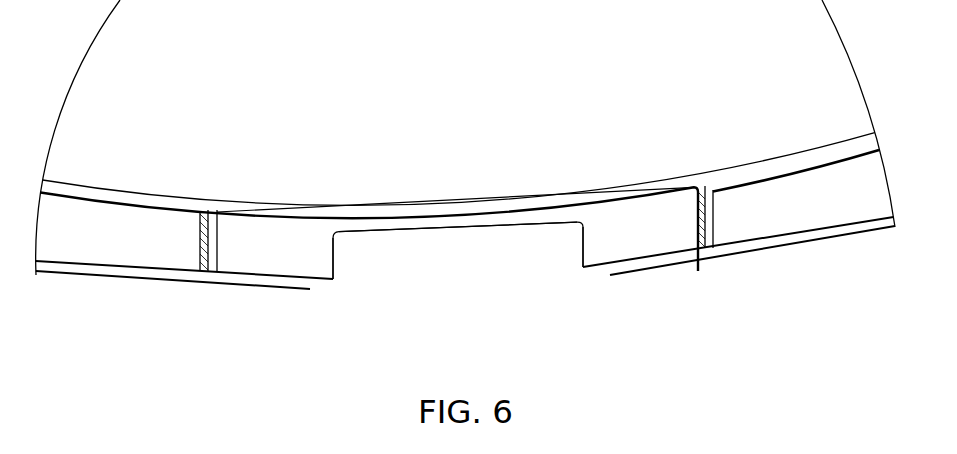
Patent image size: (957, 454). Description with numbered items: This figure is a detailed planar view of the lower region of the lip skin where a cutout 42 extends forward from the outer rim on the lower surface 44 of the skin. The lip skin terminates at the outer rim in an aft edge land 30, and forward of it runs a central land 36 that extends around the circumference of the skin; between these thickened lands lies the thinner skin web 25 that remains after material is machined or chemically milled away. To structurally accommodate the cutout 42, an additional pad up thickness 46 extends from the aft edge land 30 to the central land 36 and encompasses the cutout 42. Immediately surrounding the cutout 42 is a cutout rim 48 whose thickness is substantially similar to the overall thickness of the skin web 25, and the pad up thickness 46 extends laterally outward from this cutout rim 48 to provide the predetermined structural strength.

The skin web 25 is at (418, 65).
The aft edge land 30 is at (752, 243).
The central land 36 is at (717, 180).
The cutout 42 is at (428, 257).
The lower surface 44 is at (271, 290).
The pad up thickness 46 is at (320, 253).
The cutout rim 48 is at (505, 227).